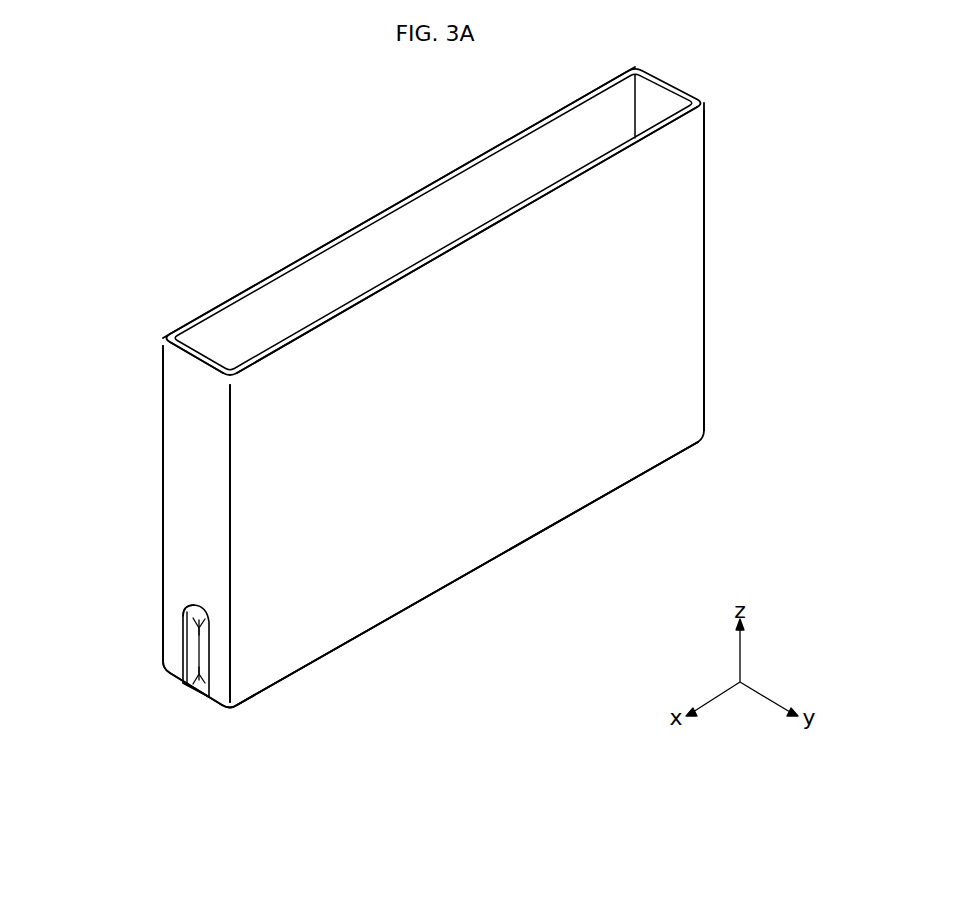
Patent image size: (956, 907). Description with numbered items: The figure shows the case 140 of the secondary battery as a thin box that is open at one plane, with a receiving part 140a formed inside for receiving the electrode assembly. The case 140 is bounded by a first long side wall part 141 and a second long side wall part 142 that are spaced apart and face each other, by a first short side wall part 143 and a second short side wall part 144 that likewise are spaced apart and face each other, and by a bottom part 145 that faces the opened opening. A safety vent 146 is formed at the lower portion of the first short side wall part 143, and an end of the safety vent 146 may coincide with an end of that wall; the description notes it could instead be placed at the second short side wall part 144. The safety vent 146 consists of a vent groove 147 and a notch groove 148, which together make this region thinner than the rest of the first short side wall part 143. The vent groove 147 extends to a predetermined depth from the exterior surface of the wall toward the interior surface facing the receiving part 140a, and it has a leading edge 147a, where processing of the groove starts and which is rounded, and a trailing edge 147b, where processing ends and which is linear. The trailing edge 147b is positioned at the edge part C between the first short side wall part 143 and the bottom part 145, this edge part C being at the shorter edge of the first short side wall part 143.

The case 140 is at (134, 318).
The receiving part 140a is at (514, 171).
The first long side wall part 141 is at (567, 503).
The second long side wall part 142 is at (397, 200).
The first short side wall part 143 is at (162, 494).
The second short side wall part 144 is at (705, 258).
The bottom part 145 is at (472, 576).
The safety vent 146 is at (186, 634).
The vent groove 147 is at (189, 686).
The leading edge 147a is at (189, 604).
The trailing edge 147b is at (200, 697).
The notch groove 148 is at (198, 653).
The edge part C is at (225, 713).